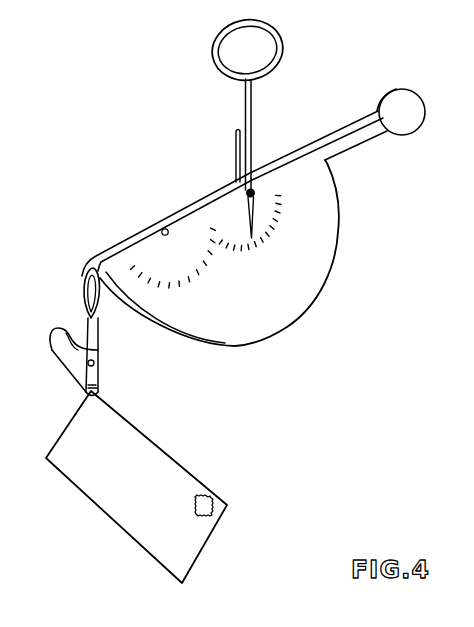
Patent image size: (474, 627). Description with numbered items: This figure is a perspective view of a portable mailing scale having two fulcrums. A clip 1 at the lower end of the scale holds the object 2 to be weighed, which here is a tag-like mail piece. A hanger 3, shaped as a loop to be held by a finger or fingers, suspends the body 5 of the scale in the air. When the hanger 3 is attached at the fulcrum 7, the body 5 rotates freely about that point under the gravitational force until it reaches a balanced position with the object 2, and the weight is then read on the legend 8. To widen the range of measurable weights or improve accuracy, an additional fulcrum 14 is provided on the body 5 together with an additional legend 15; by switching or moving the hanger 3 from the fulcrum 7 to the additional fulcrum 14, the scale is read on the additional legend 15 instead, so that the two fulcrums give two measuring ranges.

The clip 1 is at (55, 358).
The object 2 is at (93, 512).
The hanger 3 is at (238, 97).
The body 5 is at (340, 245).
The fulcrum 7 is at (238, 197).
The legend 8 is at (289, 227).
The additional fulcrum 14 is at (159, 232).
The additional legend 15 is at (195, 283).